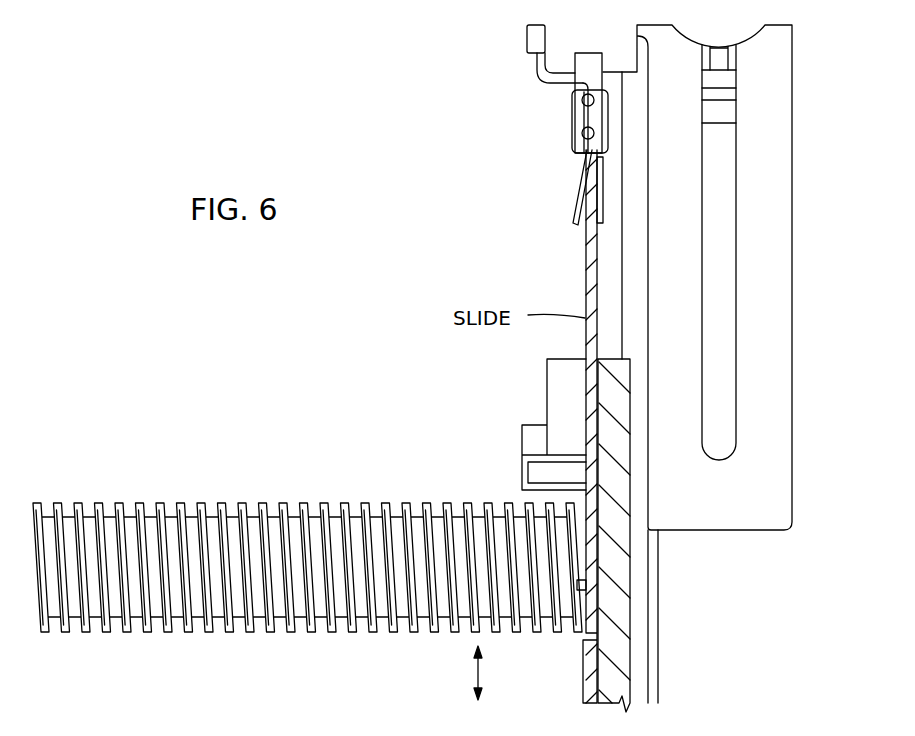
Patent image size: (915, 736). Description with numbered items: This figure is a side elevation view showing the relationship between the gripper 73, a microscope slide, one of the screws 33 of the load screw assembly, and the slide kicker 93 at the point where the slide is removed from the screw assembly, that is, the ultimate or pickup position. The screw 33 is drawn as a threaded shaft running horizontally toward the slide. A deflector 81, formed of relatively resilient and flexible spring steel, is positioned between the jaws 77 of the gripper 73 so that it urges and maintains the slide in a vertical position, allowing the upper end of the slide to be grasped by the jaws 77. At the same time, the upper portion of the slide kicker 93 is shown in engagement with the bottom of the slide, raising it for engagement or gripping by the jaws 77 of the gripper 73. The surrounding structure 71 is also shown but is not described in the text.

The housing 71 is at (793, 282).
The gripper 73 is at (583, 63).
The jaws 77 is at (577, 228).
The deflector 81 is at (553, 87).
The screw 33 is at (222, 500).
The slide kicker 93 is at (590, 670).